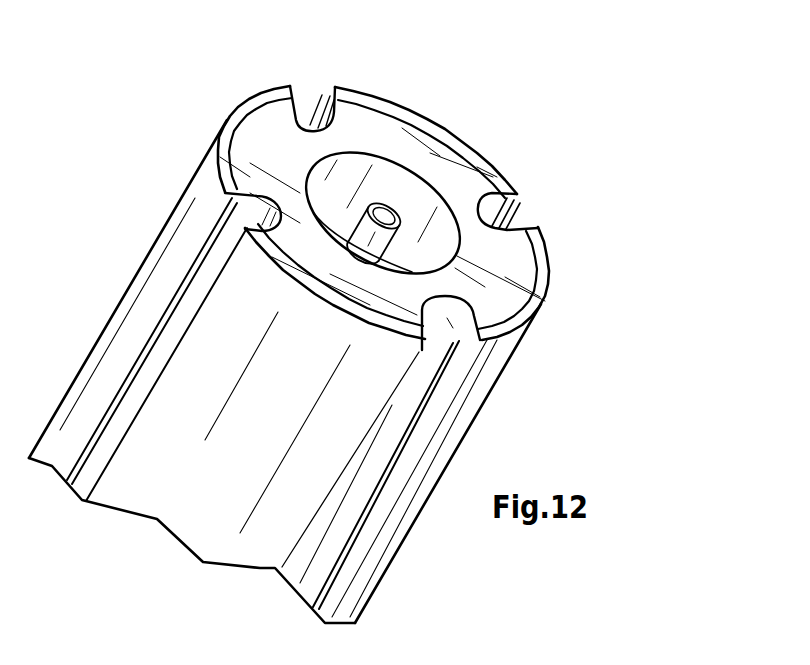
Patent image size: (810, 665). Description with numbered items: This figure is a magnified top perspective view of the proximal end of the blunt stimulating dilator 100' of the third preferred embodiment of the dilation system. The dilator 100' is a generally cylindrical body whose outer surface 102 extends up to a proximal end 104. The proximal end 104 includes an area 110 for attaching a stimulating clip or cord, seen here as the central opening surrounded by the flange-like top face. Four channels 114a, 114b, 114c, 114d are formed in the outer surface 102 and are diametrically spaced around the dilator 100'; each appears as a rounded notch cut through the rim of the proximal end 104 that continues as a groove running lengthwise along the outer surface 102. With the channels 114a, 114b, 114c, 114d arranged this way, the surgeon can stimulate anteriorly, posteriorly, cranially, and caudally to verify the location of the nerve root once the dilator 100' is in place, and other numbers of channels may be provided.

The stimulating dilator 100' is at (389, 327).
The outer surface 102 is at (313, 458).
The proximal end 104 is at (443, 124).
The area 110 is at (318, 167).
The channel 114a is at (530, 216).
The channel 114b is at (440, 353).
The channel 114c is at (212, 265).
The channel 114d is at (308, 92).